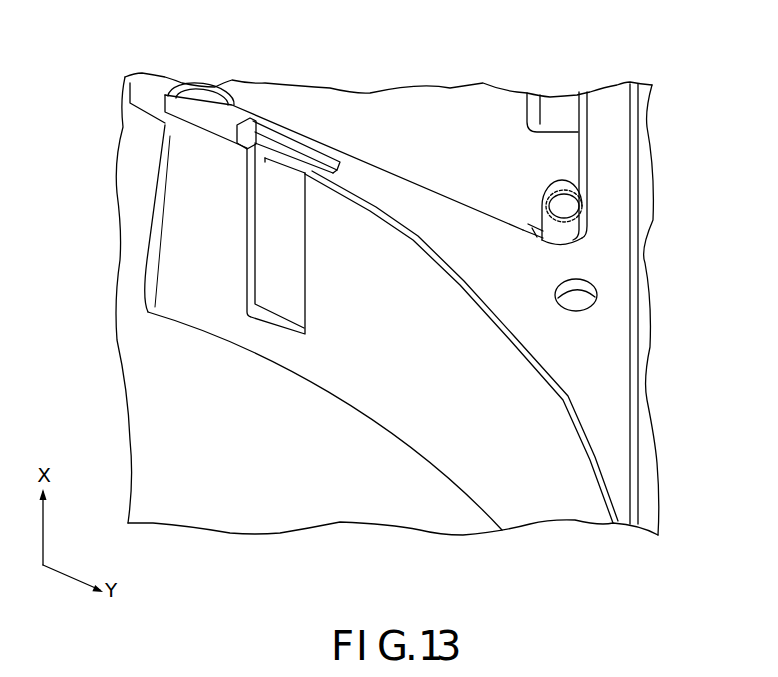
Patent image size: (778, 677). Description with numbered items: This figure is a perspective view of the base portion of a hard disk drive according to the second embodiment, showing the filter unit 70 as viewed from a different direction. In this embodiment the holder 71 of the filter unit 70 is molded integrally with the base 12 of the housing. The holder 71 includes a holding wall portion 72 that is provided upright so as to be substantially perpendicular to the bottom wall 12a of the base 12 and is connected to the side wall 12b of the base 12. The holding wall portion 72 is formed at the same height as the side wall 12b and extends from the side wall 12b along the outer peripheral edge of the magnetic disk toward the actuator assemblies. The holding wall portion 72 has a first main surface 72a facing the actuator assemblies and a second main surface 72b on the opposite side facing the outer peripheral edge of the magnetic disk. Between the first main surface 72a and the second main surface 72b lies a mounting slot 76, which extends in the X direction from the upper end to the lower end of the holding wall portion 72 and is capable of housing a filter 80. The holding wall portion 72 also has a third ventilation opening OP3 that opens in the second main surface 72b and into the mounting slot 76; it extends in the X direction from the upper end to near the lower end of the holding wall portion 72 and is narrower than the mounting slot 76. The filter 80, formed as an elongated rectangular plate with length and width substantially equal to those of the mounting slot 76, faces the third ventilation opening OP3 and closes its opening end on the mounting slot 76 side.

The base 12 is at (669, 240).
The bottom wall 12a is at (286, 505).
The side wall 12b is at (602, 389).
The filter unit 70 is at (350, 120).
The holder 71 is at (188, 221).
The holding wall portion 72 is at (432, 213).
The first main surface 72a is at (387, 170).
The second main surface 72b is at (353, 382).
The mounting slot 76 is at (256, 116).
The filter 80 is at (292, 245).
The third ventilation opening OP3 is at (252, 242).